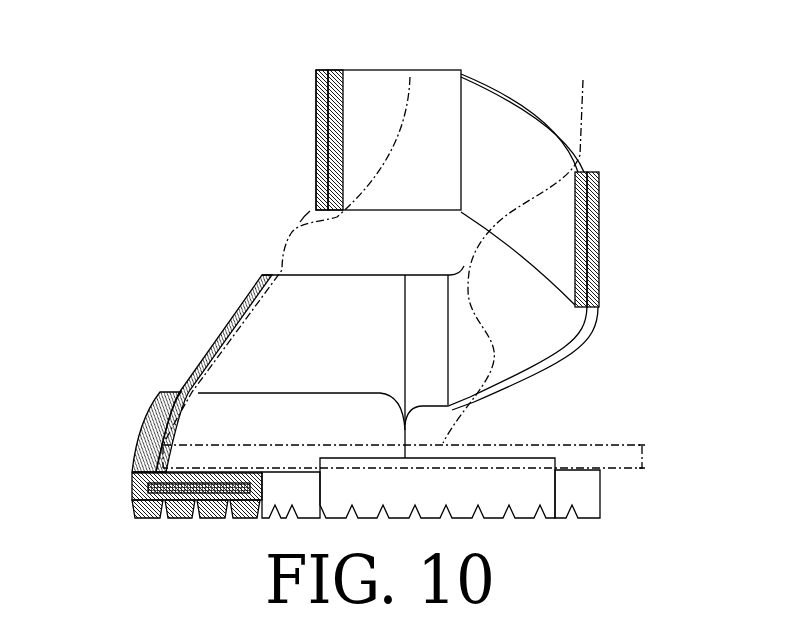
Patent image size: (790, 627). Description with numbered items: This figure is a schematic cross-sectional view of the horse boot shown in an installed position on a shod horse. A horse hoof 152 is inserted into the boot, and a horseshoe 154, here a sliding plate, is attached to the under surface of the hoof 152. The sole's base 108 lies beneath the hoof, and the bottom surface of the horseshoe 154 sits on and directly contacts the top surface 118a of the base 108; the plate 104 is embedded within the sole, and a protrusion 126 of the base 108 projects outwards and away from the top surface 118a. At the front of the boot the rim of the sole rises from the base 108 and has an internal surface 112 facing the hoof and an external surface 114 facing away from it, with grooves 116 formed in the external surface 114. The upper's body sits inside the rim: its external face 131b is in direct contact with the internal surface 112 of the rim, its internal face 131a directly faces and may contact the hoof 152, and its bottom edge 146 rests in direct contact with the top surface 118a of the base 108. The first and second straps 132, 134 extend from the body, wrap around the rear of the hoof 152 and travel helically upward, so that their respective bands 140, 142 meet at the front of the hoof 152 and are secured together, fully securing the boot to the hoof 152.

The band 140 is at (343, 90).
The band 142 is at (316, 106).
The horse hoof 152 is at (583, 90).
The second strap 134 is at (578, 207).
The first strap 132 is at (597, 290).
The external face 131b is at (248, 296).
The internal face 131a is at (255, 298).
The internal surface 112 is at (170, 432).
The grooves 116 is at (158, 403).
The external surface 114 is at (138, 440).
The bottom edge 146 is at (135, 470).
The plate 104 is at (150, 488).
The base 108 is at (133, 508).
The protrusions 126 is at (520, 458).
The top surface 118a is at (578, 470).
The horseshoe 154 is at (644, 455).